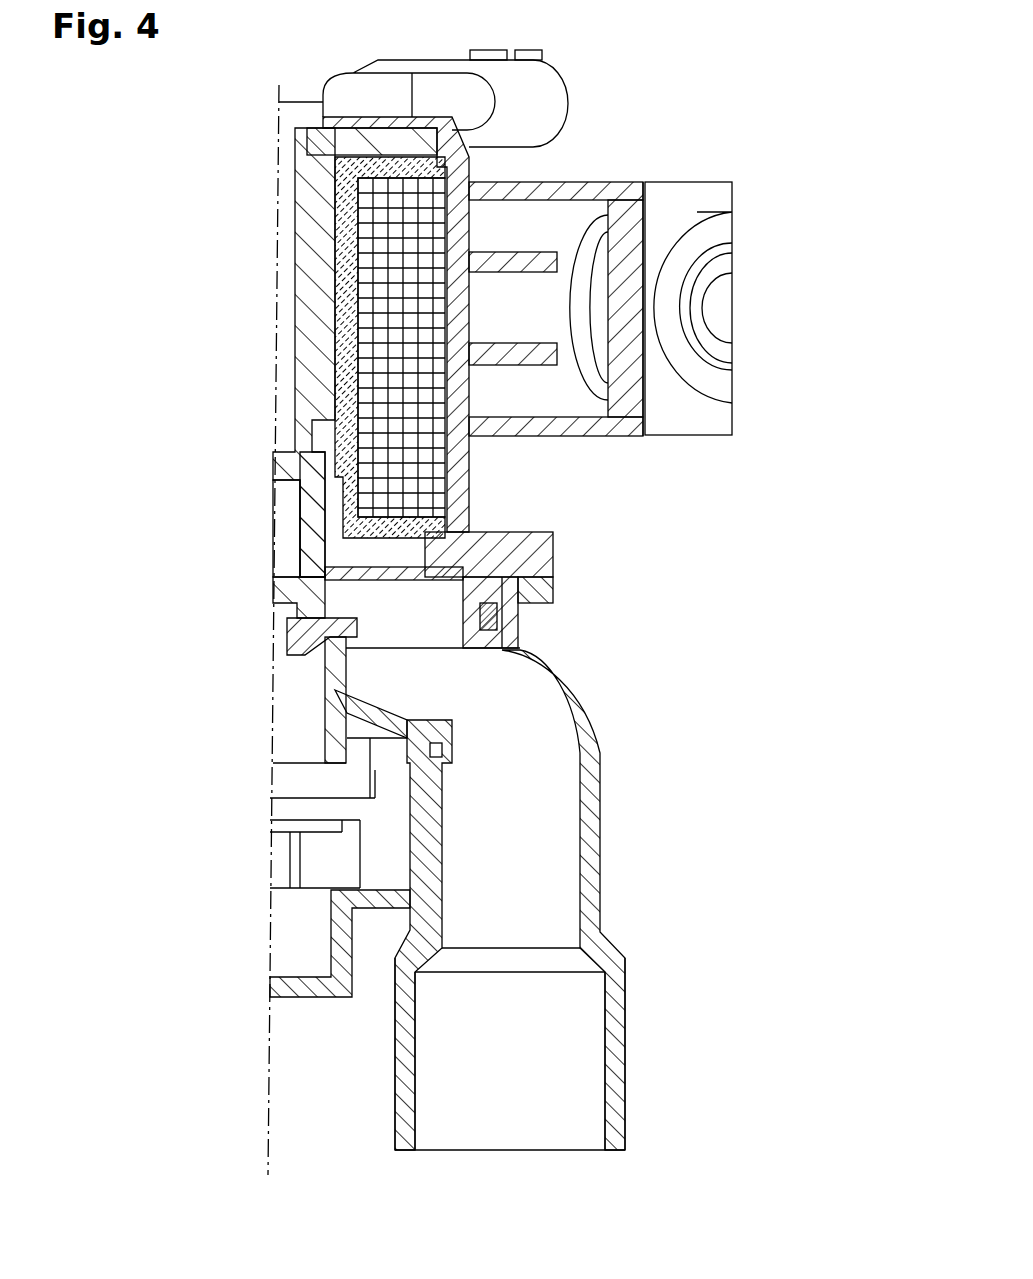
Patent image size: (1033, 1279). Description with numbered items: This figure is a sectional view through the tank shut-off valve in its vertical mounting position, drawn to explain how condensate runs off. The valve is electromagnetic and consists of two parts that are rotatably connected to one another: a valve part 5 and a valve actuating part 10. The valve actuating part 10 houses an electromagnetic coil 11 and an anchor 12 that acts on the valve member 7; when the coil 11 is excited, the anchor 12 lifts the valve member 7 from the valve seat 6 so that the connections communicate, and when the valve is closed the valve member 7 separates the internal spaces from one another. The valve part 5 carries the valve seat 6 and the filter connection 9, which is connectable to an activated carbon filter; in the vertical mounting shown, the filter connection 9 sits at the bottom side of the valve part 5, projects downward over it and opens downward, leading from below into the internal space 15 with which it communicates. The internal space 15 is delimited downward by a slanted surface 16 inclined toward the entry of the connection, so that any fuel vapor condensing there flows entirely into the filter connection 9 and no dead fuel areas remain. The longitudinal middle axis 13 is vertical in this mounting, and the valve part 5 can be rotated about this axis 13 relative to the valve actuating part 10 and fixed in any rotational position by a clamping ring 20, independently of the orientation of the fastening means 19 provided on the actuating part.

The valve part 5 is at (648, 769).
The valve seat 6 is at (262, 633).
The valve member 7 is at (310, 516).
The filter connection 9 is at (561, 1047).
The valve actuating part 10 is at (545, 467).
The electromagnetic coil 11 is at (386, 242).
The anchor 12 is at (313, 296).
The longitudinal middle axis 13 is at (268, 1128).
The internal space 15 is at (446, 696).
The slanted surface 16 is at (385, 705).
The fastening means 19 is at (697, 195).
The clamping ring 20 is at (553, 563).